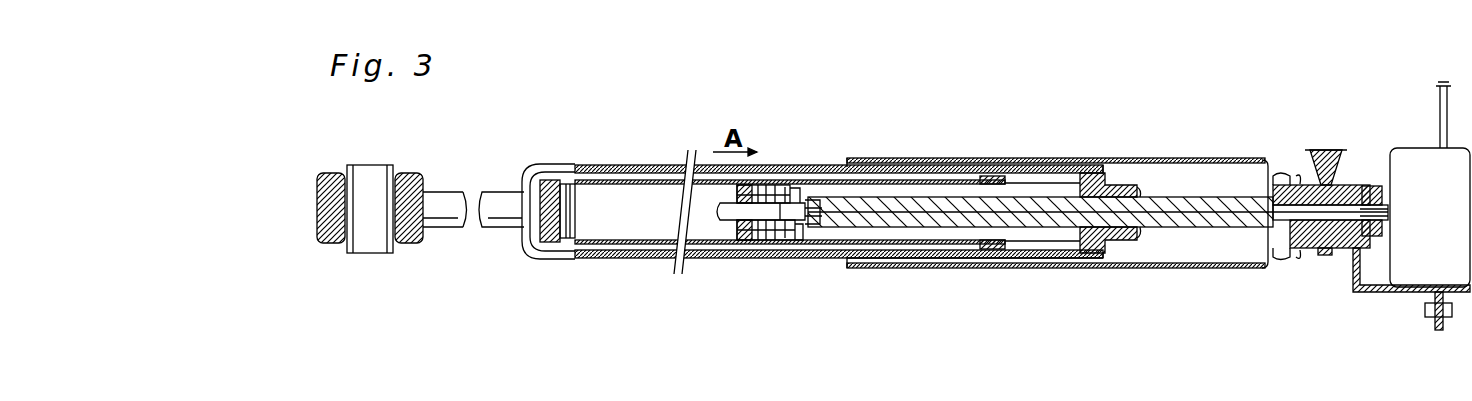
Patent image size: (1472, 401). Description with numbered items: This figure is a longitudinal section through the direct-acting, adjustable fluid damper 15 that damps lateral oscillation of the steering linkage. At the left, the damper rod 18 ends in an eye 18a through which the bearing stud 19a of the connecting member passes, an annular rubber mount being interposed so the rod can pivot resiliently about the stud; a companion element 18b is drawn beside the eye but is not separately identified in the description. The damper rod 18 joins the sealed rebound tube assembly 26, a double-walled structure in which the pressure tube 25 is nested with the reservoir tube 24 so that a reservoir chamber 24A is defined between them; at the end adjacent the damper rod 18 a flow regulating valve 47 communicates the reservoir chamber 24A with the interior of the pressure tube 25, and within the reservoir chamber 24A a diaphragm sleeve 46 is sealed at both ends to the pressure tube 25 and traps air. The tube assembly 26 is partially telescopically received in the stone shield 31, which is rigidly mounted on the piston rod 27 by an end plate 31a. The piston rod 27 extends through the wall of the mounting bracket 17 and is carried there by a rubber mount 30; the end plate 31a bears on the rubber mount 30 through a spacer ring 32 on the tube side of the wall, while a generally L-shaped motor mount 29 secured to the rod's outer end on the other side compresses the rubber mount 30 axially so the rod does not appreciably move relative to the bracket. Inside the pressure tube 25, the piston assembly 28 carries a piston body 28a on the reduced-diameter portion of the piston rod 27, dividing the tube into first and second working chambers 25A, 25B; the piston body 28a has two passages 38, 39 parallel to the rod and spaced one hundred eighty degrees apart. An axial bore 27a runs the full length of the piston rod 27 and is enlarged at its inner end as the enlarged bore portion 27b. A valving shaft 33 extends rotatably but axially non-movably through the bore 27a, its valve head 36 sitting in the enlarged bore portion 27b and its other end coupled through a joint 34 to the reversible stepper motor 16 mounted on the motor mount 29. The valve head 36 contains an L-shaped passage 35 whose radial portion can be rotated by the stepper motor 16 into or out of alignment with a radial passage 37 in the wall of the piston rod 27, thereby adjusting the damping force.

The damper 15 is at (960, 152).
The reversible stepper motor 16 is at (1417, 150).
The mounting bracket 17 is at (1322, 150).
The damper rod 18 is at (492, 190).
The eye 18a is at (318, 245).
The rubber bushing 18b is at (405, 245).
The bearing stud 19a is at (353, 255).
The reservoir tube 24 is at (622, 168).
The reservoir chamber 24A is at (600, 168).
The pressure tube 25 is at (600, 258).
The first working chamber 25A is at (905, 245).
The second working chamber 25B is at (643, 212).
The sealed rebound tube assembly 26 is at (810, 160).
The piston rod 27 is at (1158, 196).
The axial bore 27a is at (1225, 228).
The enlarged bore portion 27b is at (703, 195).
The piston assembly 28 is at (727, 233).
The piston body 28a is at (770, 250).
The motor mount 29 is at (1378, 294).
The rubber mount 30 is at (1302, 256).
The stone shield 31 is at (1068, 160).
The end plate 31a is at (1232, 170).
The spacer ring 32 is at (1283, 185).
The valving shaft 33 is at (1170, 245).
The joint 34 is at (1372, 186).
The L-shaped passage 35 is at (815, 196).
The valve head 36 is at (823, 198).
The radial passage 37 is at (812, 250).
The passage 38 is at (775, 185).
The passage 39 is at (752, 250).
The diaphragm sleeve 46 is at (958, 252).
The flow regulating valve 47 is at (583, 240).